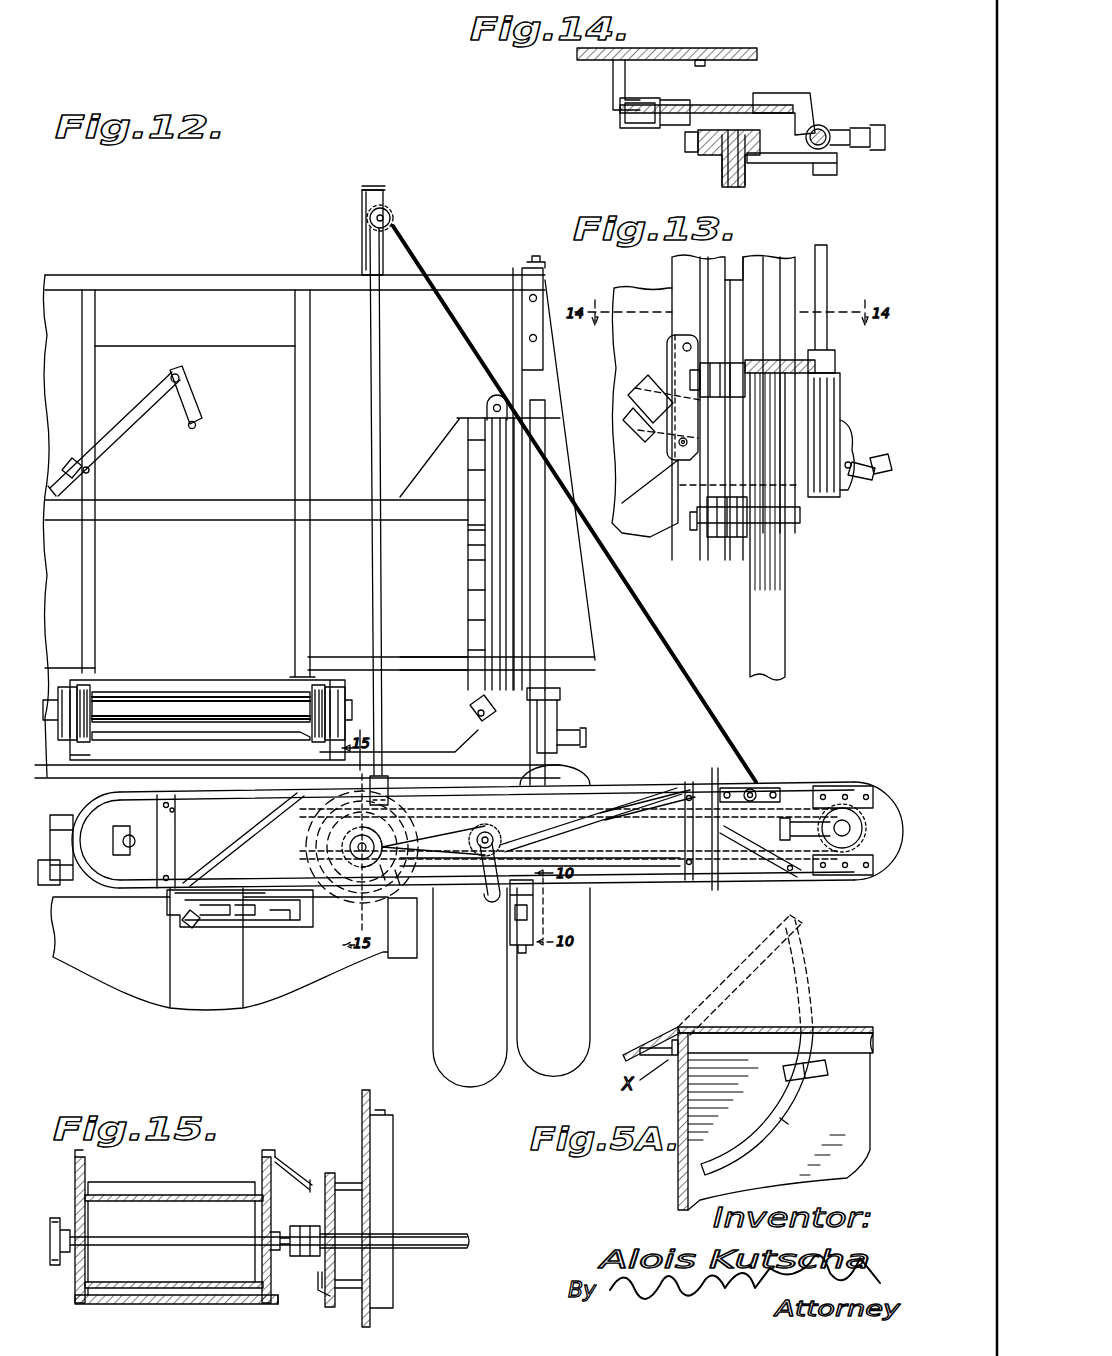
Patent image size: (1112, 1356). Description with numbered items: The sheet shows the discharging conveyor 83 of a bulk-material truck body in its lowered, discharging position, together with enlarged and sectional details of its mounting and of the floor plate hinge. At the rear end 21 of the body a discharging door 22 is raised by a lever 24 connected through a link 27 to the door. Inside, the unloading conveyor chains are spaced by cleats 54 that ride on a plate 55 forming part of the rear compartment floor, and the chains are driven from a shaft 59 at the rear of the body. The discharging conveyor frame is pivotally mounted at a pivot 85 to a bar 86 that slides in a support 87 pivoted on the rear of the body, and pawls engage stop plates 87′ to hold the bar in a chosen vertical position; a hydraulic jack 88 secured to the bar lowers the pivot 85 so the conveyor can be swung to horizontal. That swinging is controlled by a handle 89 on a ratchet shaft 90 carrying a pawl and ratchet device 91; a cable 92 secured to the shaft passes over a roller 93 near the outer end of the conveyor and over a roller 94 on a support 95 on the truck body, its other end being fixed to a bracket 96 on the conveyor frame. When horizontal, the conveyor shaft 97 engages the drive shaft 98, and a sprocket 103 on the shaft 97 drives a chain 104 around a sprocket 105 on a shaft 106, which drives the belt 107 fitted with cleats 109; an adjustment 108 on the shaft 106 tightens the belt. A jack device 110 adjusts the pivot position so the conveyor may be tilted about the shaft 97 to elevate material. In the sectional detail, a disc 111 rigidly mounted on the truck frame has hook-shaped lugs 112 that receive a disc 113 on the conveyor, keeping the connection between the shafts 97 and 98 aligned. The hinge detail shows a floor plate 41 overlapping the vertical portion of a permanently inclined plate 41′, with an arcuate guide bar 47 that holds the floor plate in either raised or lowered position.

In FIG. 12, the rear end 21 is at (330, 300).
In FIG. 12, the discharging door 22 is at (232, 350).
In FIG. 12, the lever 24 is at (135, 422).
In FIG. 12, the link 27 is at (196, 405).
In FIG. 12, the shaft 59 is at (50, 700).
In FIG. 12, the cleats 54 is at (150, 735).
In FIG. 12, the plate 55 is at (210, 704).
In FIG. 12, the support 95 is at (380, 198).
In FIG. 12, the roller 94 is at (392, 212).
In FIG. 12, the cable 92 is at (678, 662).
In FIG. 12, the bracket 96 is at (384, 775).
In FIG. 12, the support 87 is at (468, 606).
In FIG. 14, the support 87 is at (690, 142).
In FIG. 13, the support 87 is at (678, 323).
In FIG. 12, the stop plates 87′ is at (468, 547).
In FIG. 12, the hydraulic jack 88 is at (560, 728).
In FIG. 14, the hydraulic jack 88 is at (822, 125).
In FIG. 13, the hydraulic jack 88 is at (845, 492).
In FIG. 12, the bar 86 is at (572, 775).
In FIG. 14, the bar 86 is at (760, 165).
In FIG. 13, the bar 86 is at (780, 615).
In FIG. 12, the discharging conveyor 83 is at (752, 891).
In FIG. 15, the discharging conveyor 83 is at (280, 1150).
In FIG. 12, the sprocket 103 is at (395, 847).
In FIG. 15, the sprocket 103 is at (56, 1218).
In FIG. 12, the pawl and ratchet device 91 is at (488, 828).
In FIG. 12, the ratchet shaft 90 is at (470, 843).
In FIG. 12, the handle 89 is at (490, 897).
In FIG. 12, the pivot 85 is at (512, 915).
In FIG. 12, the chain 104 is at (627, 866).
In FIG. 12, the roller 93 is at (722, 790).
In FIG. 12, the adjustment 108 is at (800, 790).
In FIG. 12, the shaft 106 is at (842, 836).
In FIG. 12, the sprocket 105 is at (850, 858).
In FIG. 12, the jack device 110 is at (193, 907).
In FIG. 12, the shaft 97 is at (360, 855).
In FIG. 15, the shaft 97 is at (205, 1222).
In FIG. 5A, the floor plates 41 is at (725, 976).
In FIG. 5A, the inclined plates 41′ is at (663, 1031).
In FIG. 5A, the guide bar 47 is at (796, 1110).
In FIG. 15, the cleats 109 is at (152, 1182).
In FIG. 15, the belt 107 is at (170, 1194).
In FIG. 15, the disc 111 is at (330, 1175).
In FIG. 15, the disc 113 is at (322, 1190).
In FIG. 15, the hook-shaped lugs 112 is at (326, 1292).
In FIG. 15, the shaft 98 is at (408, 1236).